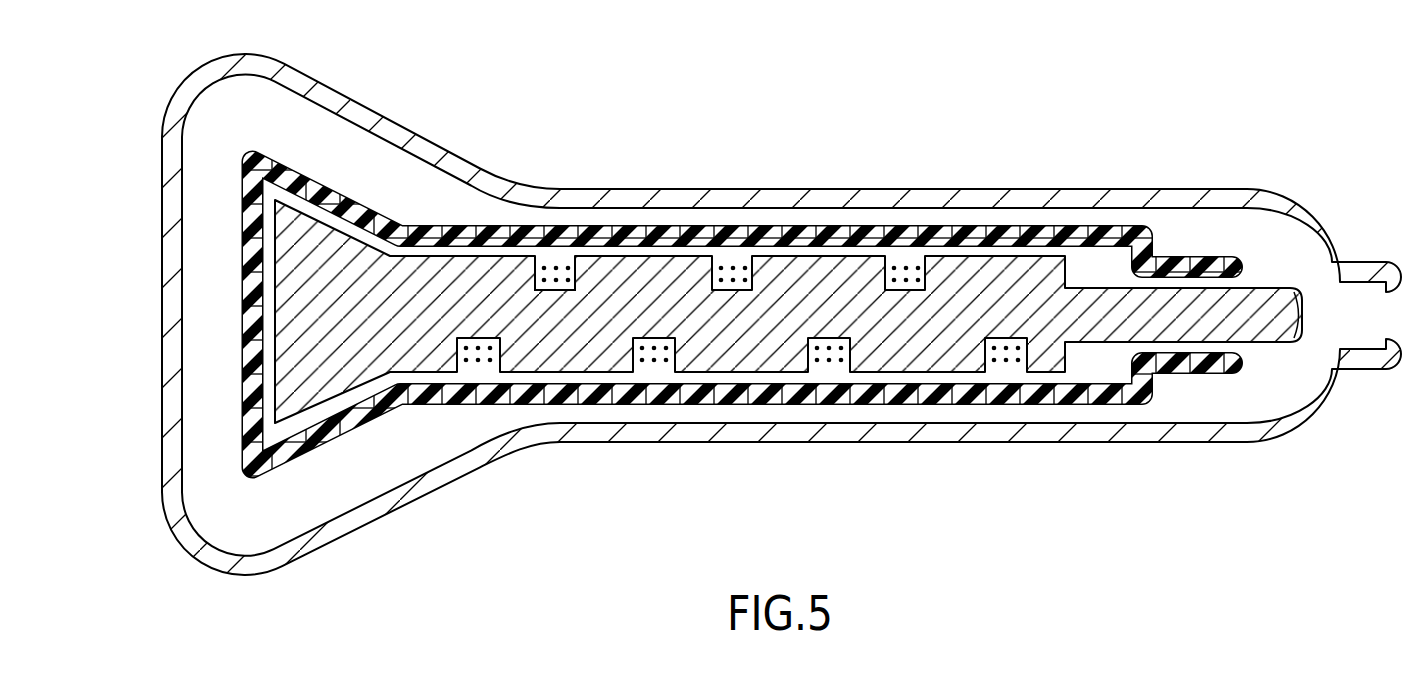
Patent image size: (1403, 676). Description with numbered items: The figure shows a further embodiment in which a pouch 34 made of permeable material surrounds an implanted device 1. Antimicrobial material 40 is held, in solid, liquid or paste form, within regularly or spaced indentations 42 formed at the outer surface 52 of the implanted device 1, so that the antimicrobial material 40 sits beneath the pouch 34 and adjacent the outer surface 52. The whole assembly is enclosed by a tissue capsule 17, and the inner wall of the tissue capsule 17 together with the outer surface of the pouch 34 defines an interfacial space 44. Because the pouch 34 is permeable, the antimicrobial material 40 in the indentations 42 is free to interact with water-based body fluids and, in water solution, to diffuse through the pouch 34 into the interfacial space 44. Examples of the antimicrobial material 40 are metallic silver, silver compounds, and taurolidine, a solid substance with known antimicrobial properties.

The implanted device 1 is at (1020, 285).
The tissue capsule 17 is at (184, 79).
The pouch 34 is at (441, 222).
The antimicrobial material 40 is at (896, 256).
The indentations 42 is at (557, 296).
The interfacial space 44 is at (230, 140).
The outer surface of the implanted device 52 is at (1068, 382).